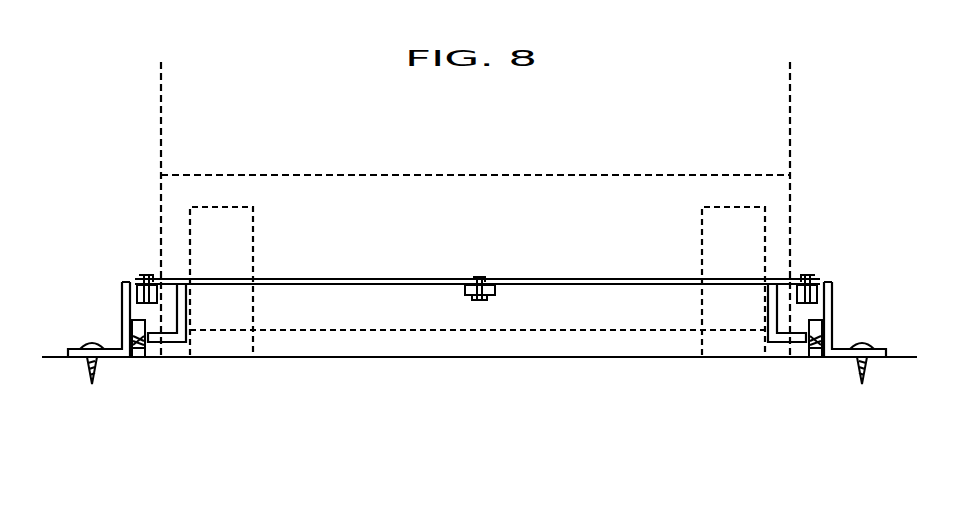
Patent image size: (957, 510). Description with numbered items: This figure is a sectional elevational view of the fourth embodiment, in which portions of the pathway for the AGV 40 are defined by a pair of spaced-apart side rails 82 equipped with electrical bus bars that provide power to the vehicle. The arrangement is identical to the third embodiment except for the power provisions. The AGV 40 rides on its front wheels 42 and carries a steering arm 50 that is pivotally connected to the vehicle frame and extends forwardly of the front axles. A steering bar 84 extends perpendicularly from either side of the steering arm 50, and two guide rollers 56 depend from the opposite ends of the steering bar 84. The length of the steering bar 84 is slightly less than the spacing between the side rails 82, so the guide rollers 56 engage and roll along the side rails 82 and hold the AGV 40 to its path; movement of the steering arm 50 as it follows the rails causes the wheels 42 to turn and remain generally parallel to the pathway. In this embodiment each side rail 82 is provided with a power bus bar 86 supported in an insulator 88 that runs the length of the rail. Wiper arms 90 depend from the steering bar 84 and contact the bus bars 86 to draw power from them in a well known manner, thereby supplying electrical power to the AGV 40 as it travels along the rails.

The AGV 40 is at (292, 175).
The front wheels 42 is at (243, 233).
The steering arm 50 is at (490, 295).
The guide rollers 56 is at (121, 287).
The side rails 82 is at (127, 314).
The steering bar 84 is at (600, 279).
The power bus bars 86 is at (131, 337).
The insulators 88 is at (139, 357).
The wiper arms 90 is at (178, 343).